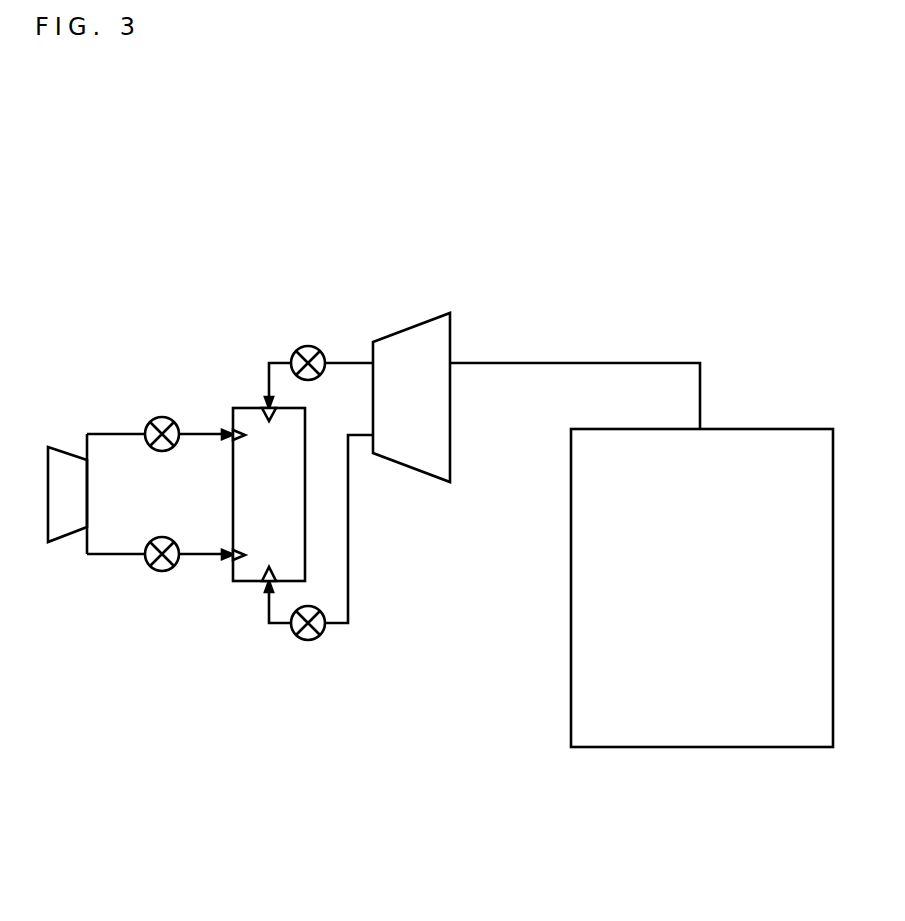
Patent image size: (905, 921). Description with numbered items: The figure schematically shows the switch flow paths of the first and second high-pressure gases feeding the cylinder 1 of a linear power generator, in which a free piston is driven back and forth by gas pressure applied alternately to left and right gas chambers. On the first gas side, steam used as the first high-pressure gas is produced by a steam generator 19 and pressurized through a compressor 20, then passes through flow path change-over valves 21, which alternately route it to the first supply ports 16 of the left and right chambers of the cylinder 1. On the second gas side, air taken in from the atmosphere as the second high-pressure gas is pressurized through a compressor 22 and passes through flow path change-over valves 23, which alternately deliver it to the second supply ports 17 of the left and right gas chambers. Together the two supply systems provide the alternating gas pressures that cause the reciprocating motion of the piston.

The cylinder 1 is at (235, 583).
The first supply port 16 is at (266, 404).
The second supply port 17 is at (228, 437).
The steam generator 19 is at (705, 749).
The compressor 20 is at (420, 322).
The flow path change-over valve 21 is at (305, 346).
The compressor 22 is at (67, 445).
The flow path change-over valve 23 is at (162, 416).